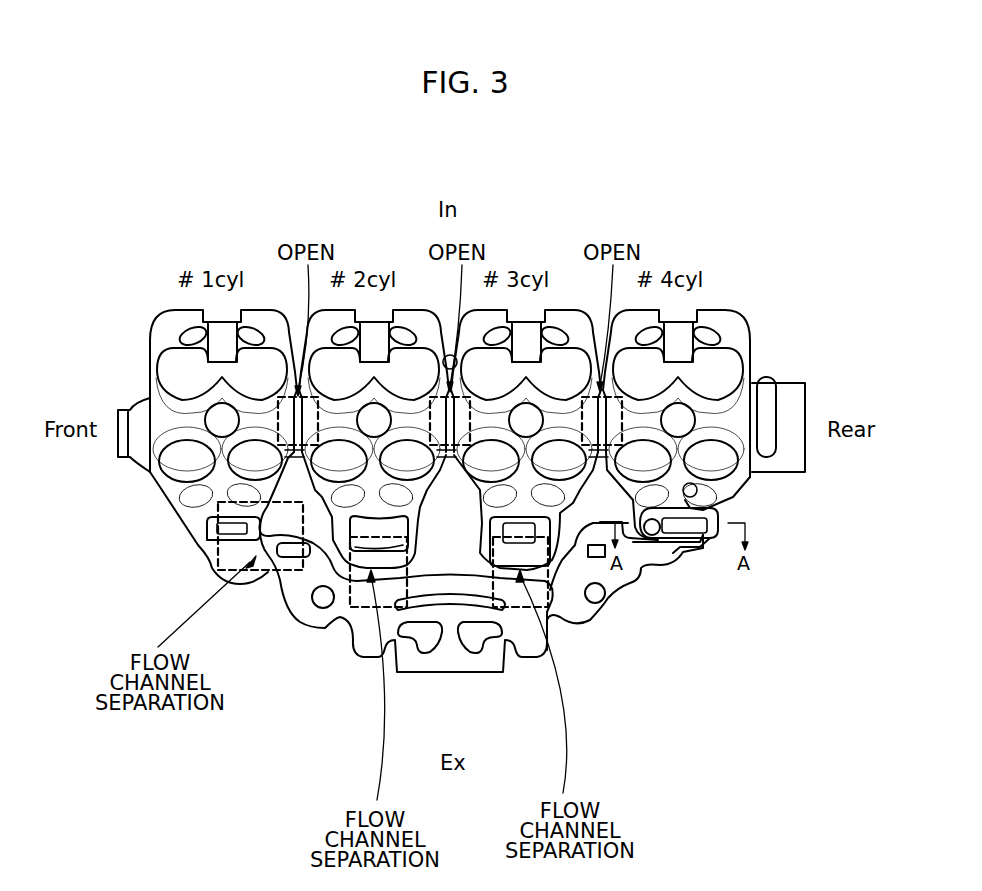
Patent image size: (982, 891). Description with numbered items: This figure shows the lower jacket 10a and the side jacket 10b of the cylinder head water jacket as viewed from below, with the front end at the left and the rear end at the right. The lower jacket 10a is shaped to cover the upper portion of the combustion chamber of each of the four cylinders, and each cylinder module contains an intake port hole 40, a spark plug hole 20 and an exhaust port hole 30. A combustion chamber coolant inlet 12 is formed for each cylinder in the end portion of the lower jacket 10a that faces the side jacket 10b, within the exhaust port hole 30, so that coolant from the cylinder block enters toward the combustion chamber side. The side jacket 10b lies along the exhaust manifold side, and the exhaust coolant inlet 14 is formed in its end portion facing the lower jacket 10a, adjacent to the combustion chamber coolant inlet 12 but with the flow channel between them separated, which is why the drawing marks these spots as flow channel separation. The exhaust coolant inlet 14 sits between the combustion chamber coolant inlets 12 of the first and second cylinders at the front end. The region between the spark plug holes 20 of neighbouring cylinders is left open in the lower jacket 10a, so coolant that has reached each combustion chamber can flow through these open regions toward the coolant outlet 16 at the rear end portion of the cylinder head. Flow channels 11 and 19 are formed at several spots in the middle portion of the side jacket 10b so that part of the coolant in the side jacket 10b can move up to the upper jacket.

The lower jacket 10a is at (257, 238).
The side jacket 10b is at (576, 632).
The flow channel 11 is at (323, 600).
The combustion chamber coolant inlet 12 is at (228, 529).
The exhaust coolant inlet 14 is at (288, 578).
The coolant outlet 16 is at (792, 460).
The flow channel 19 is at (596, 593).
The spark plug hole 20 is at (213, 417).
The exhaust port hole 30 is at (186, 470).
The intake port hole 40 is at (176, 368).